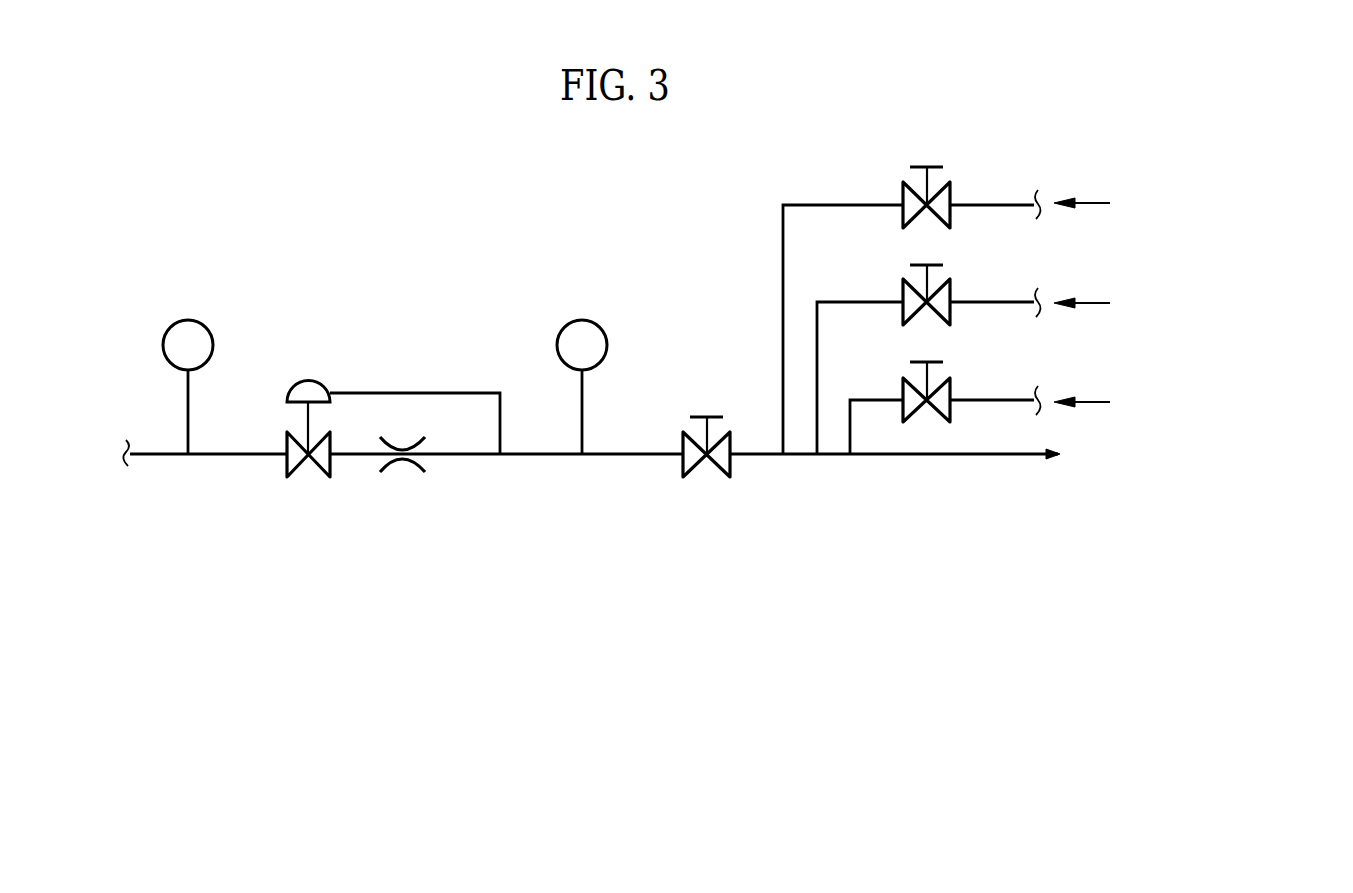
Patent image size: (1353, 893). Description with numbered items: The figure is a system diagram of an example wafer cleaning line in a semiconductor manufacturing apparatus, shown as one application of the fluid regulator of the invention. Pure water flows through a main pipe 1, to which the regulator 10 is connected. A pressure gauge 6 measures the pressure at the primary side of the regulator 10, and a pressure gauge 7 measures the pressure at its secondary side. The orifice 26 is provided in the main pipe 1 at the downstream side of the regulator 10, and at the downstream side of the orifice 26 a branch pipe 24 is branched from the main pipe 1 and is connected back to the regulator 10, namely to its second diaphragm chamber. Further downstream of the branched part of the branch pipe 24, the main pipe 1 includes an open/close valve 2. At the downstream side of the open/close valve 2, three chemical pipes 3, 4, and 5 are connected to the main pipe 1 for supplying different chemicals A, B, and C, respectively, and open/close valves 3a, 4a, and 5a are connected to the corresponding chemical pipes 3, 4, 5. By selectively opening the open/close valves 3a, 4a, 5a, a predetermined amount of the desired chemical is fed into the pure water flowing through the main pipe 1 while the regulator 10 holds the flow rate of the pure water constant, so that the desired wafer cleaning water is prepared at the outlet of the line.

The main pipe 1 is at (232, 455).
The open/close valve 2 is at (698, 470).
The chemical pipe 3 is at (783, 240).
The open/close valve 3a is at (950, 190).
The chemical pipe 4 is at (817, 340).
The open/close valve 4a is at (950, 290).
The chemical pipe 5 is at (850, 432).
The open/close valve 5a is at (950, 390).
The pressure gauge 6 is at (207, 322).
The pressure gauge 7 is at (607, 343).
The regulator 10 is at (307, 488).
The branch pipe 24 is at (427, 392).
The orifice 26 is at (420, 468).